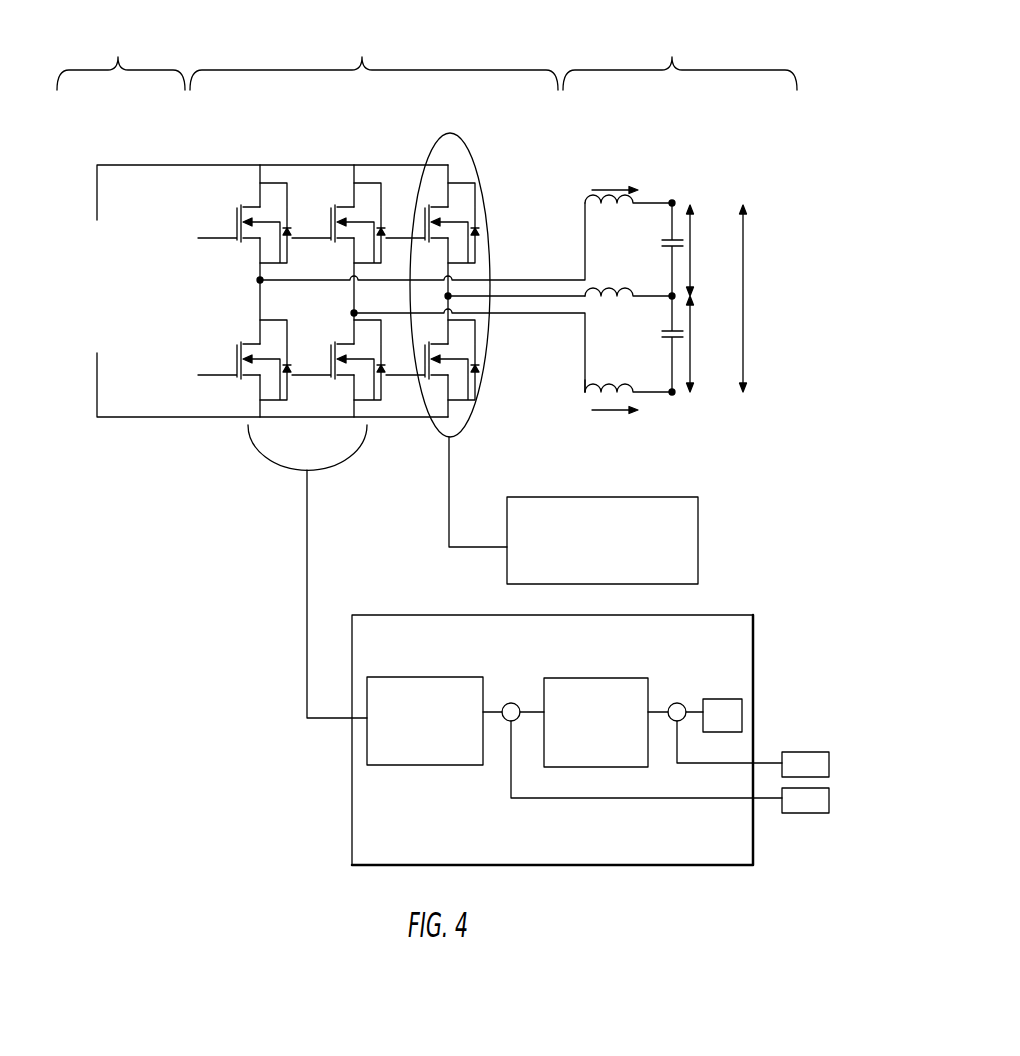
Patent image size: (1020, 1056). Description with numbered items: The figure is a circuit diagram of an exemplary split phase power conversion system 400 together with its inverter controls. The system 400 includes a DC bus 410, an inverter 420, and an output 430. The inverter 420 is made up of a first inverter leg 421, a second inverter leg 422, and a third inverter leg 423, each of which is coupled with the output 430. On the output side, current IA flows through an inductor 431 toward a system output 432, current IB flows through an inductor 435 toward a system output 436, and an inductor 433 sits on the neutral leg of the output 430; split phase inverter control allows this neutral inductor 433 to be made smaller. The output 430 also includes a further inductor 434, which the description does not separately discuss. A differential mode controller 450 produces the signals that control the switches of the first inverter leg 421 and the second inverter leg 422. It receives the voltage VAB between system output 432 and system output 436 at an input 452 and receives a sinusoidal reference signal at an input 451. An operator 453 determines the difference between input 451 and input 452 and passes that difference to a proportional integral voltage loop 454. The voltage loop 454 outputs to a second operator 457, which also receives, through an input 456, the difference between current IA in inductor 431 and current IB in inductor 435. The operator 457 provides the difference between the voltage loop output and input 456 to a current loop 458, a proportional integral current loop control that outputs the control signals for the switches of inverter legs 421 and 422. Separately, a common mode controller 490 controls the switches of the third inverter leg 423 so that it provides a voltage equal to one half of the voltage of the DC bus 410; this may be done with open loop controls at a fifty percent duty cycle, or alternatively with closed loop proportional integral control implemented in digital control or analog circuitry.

The system 400 is at (718, 47).
The DC bus 410 is at (265, 223).
The inverter 420 is at (352, 374).
The output 430 is at (521, 233).
The first inverter leg 421 is at (260, 164).
The second inverter leg 422 is at (354, 164).
The third inverter leg 423 is at (446, 160).
The inductor 431 is at (611, 205).
The system output 432 is at (672, 200).
The inductor 433 is at (585, 405).
The middle inductor 434 is at (670, 300).
The inductor 435 is at (614, 392).
The system output 436 is at (675, 396).
The differential mode controller 450 is at (755, 642).
The input 451 is at (722, 699).
The input 452 is at (818, 752).
The operator 453 is at (677, 703).
The PI voltage loop 454 is at (599, 677).
The input 456 is at (799, 813).
The operator 457 is at (512, 702).
The current loop 458 is at (427, 767).
The common mode controller 490 is at (699, 518).